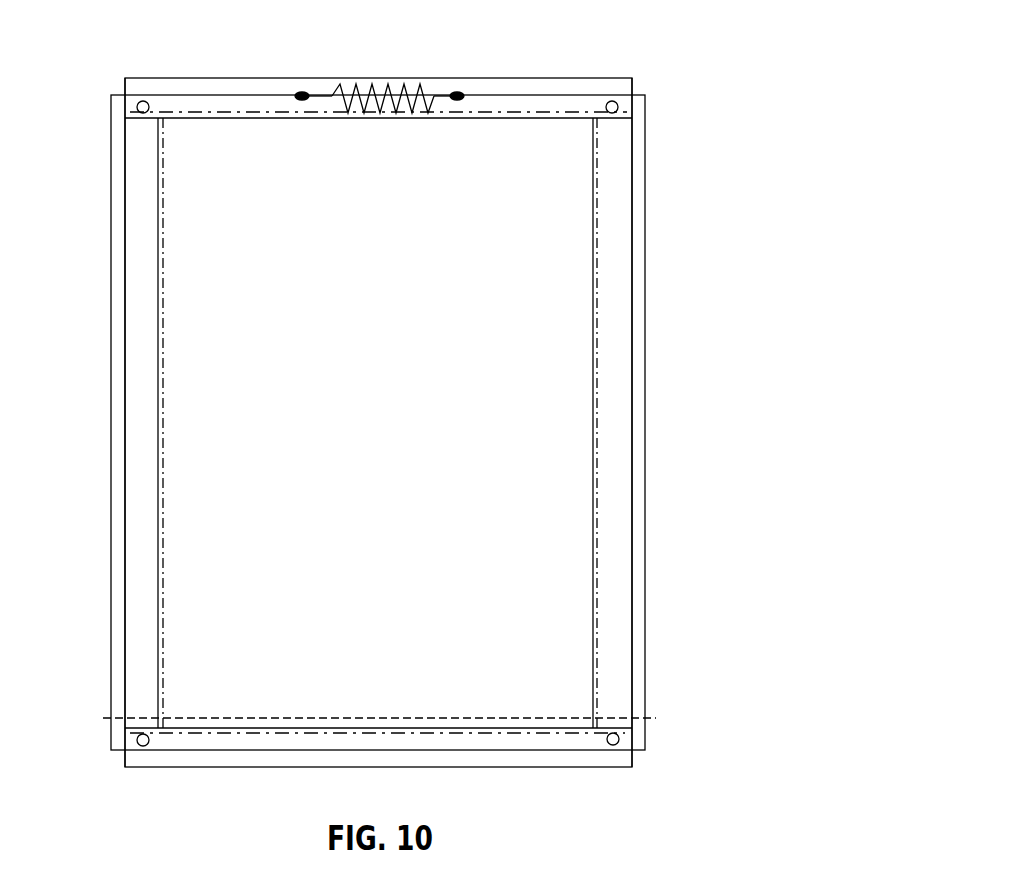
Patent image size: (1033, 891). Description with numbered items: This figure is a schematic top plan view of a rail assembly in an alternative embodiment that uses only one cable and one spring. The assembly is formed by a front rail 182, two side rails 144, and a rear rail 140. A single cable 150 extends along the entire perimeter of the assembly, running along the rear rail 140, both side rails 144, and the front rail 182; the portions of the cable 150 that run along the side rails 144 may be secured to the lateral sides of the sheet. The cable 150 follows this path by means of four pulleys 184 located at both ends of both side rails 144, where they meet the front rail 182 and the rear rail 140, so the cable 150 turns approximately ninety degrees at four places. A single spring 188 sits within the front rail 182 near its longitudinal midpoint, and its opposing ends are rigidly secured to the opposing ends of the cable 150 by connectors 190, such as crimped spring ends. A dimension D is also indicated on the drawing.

The rear rail 140 is at (188, 768).
The side rails 144 is at (125, 358).
The single cable 150 is at (645, 400).
The front rail 182 is at (224, 78).
The pulleys 184 is at (141, 101).
The single spring 188 is at (408, 82).
The connectors 190 is at (302, 93).
The distance D is at (654, 718).